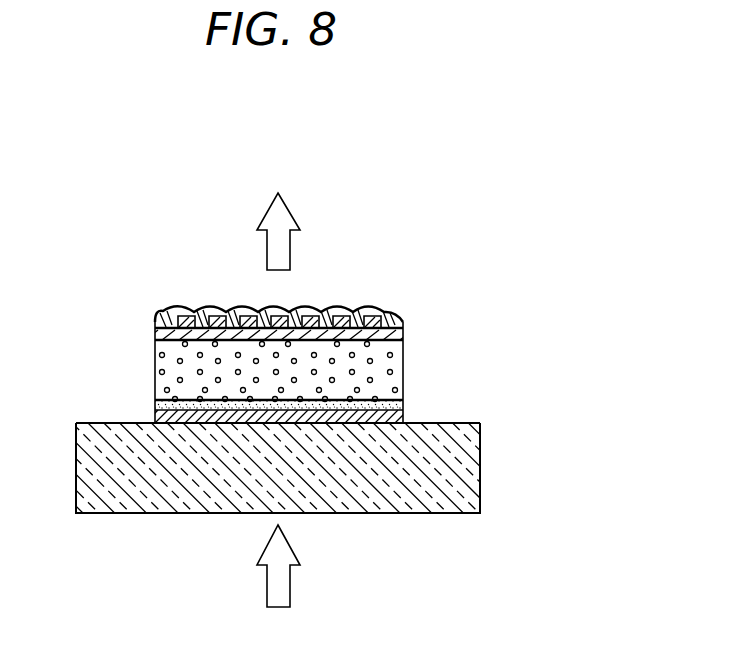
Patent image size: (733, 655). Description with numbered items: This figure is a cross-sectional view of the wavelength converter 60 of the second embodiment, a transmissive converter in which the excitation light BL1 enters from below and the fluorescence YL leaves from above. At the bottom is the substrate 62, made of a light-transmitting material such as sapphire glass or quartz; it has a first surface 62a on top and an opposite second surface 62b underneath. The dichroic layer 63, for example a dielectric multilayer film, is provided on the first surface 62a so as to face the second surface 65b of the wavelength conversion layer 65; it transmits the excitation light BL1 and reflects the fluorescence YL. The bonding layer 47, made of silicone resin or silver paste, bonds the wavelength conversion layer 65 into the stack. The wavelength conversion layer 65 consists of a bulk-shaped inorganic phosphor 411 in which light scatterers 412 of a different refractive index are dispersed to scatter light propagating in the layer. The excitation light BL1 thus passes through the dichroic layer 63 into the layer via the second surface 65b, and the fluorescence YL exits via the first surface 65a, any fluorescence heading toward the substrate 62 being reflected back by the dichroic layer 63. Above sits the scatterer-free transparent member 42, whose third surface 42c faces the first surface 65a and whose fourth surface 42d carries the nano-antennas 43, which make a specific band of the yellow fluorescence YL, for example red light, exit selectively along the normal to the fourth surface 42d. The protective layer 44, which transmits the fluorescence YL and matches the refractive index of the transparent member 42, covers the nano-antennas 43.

The wavelength converter 60 is at (265, 177).
The substrate 62 is at (471, 467).
The first surface of substrate 62a is at (462, 423).
The second surface of substrate 62b is at (455, 514).
The dichroic layer 63 is at (157, 416).
The bonding layer 47 is at (158, 405).
The wavelength conversion layer 65 is at (357, 414).
The first surface of wavelength conversion layer 65a is at (392, 333).
The second surface of wavelength conversion layer 65b is at (384, 402).
The inorganic phosphor 411 is at (398, 361).
The light scatterers 412 is at (398, 383).
The transparent member 42 is at (222, 281).
The third surface 42c is at (158, 343).
The fourth surface 42d is at (164, 320).
The nano-antennas 43 is at (371, 308).
The protective layer 44 is at (174, 308).
The fluorescence YL is at (278, 255).
The excitation light BL1 is at (270, 597).